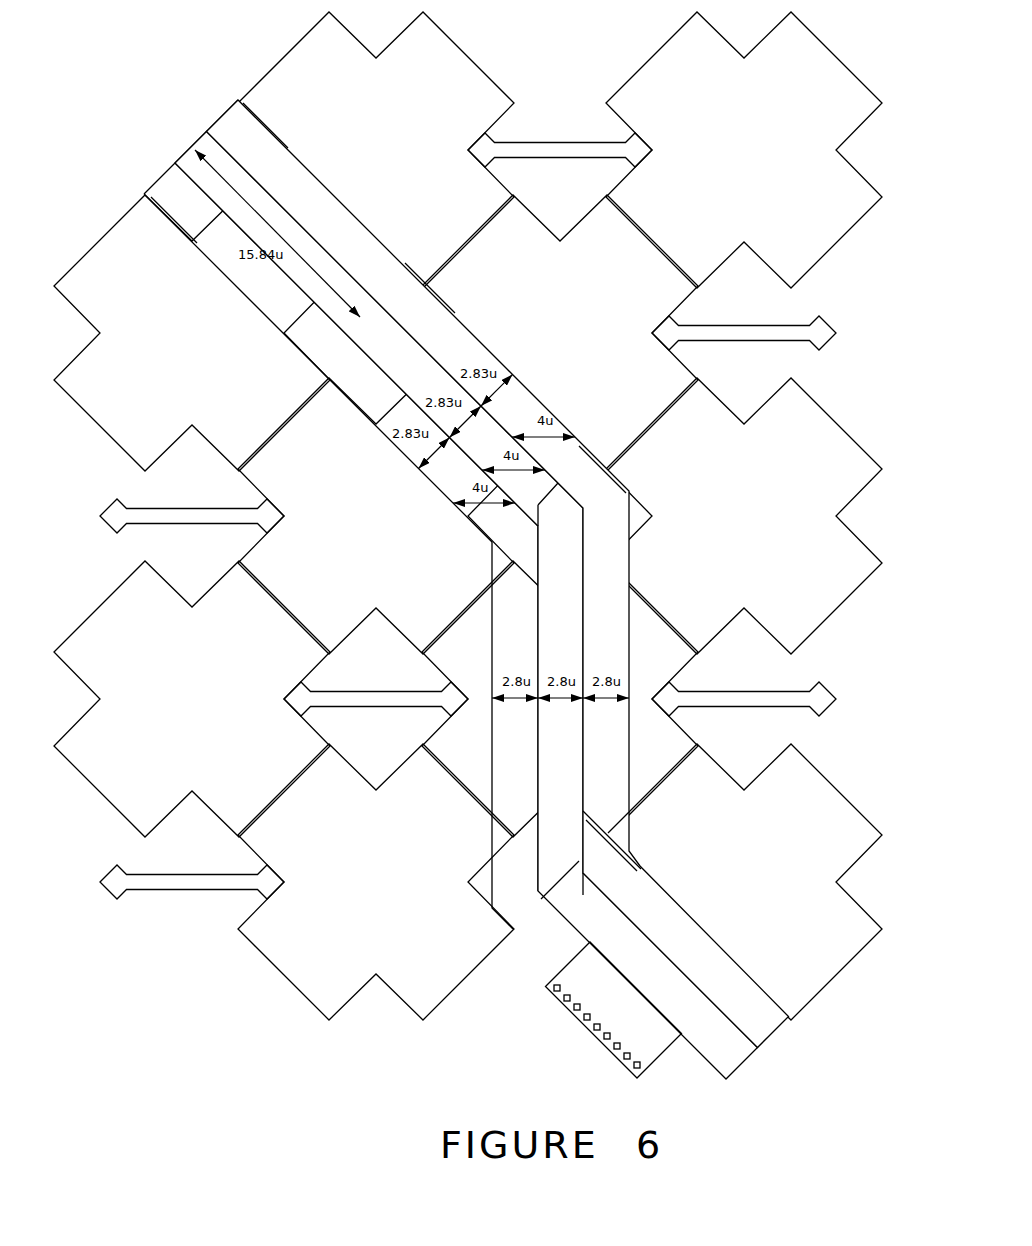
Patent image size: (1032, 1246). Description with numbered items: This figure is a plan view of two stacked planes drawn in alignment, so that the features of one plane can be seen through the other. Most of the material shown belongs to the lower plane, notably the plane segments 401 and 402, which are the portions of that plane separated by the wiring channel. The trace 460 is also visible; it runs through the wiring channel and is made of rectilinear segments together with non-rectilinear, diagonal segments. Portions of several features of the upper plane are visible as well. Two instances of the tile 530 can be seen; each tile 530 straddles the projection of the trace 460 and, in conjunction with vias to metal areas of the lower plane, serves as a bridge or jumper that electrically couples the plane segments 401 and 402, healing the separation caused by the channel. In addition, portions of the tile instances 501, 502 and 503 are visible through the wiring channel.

The plane segment 401 is at (228, 718).
The plane segment 402 is at (790, 508).
The trace 460 is at (498, 574).
The tile instance 501 is at (401, 546).
The tile instance 502 is at (466, 606).
The tile instance 503 is at (318, 321).
The tile 530 is at (525, 405).